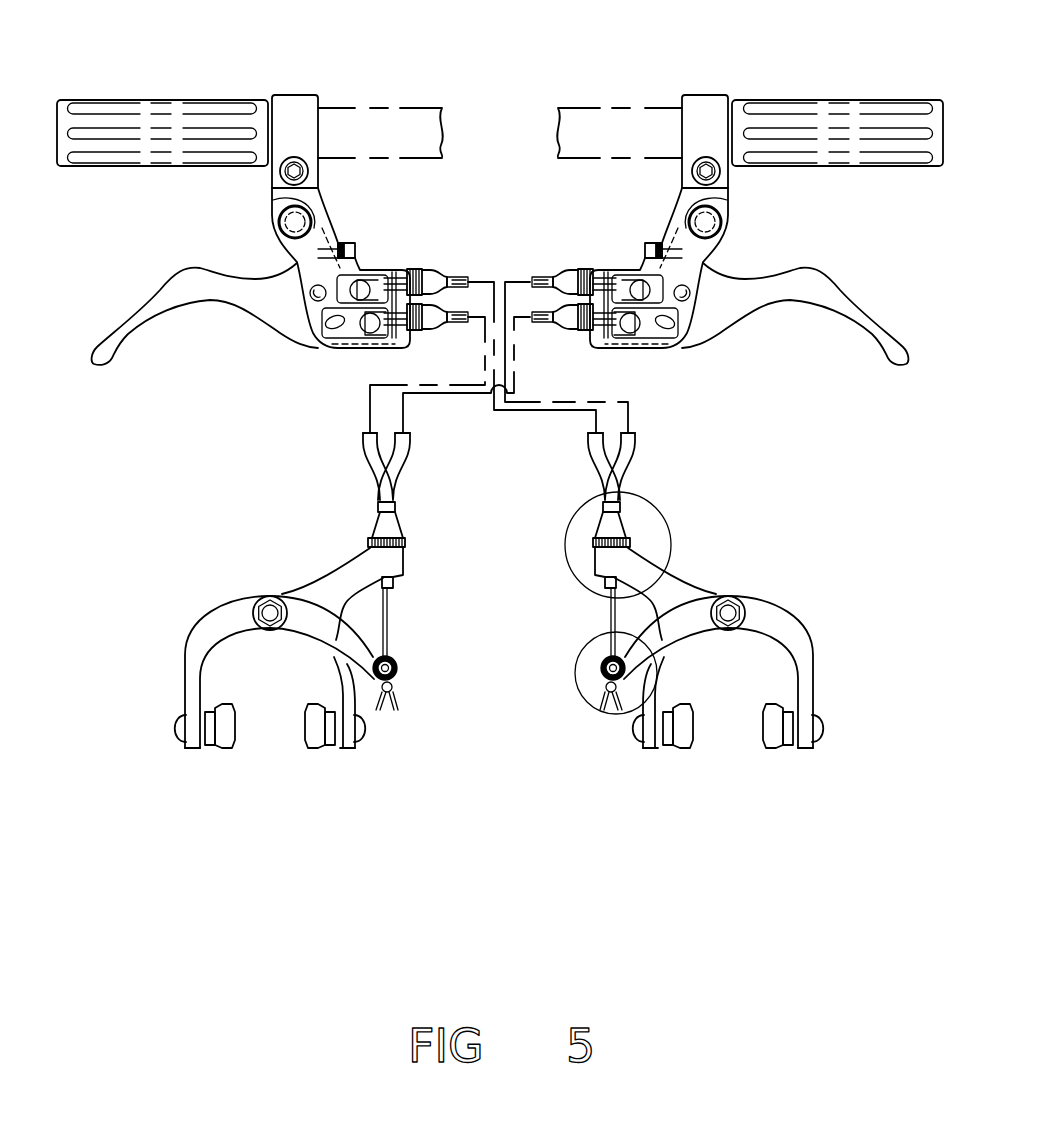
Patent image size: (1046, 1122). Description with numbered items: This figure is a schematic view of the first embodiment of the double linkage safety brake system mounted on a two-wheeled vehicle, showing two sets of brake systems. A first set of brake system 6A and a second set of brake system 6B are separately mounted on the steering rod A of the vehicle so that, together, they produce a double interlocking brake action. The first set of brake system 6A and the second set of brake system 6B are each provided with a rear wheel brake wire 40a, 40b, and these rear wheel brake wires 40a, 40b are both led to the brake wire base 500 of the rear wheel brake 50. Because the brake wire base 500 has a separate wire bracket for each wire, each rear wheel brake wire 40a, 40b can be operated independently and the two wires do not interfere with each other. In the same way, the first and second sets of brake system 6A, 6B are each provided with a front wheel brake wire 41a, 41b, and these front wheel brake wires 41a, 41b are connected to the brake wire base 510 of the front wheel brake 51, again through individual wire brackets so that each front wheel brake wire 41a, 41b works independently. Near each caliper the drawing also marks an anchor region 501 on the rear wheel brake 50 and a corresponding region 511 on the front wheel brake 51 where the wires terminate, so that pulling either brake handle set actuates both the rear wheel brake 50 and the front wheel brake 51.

The steering rod A is at (381, 122).
The first set of brake system 6A is at (388, 220).
The second set of brake system 6B is at (634, 220).
The rear wheel brake wire 40a is at (520, 281).
The rear wheel brake wire 40b is at (480, 281).
The front wheel brake wire 41a is at (519, 318).
The front wheel brake wire 41b is at (477, 318).
The rear wheel brake 50 is at (742, 692).
The brake wire base 500 is at (605, 562).
The cable anchor of first brake caliper 501 is at (606, 665).
The front wheel brake 51 is at (282, 692).
The brake wire base 510 is at (397, 561).
The cable anchor of second brake caliper 511 is at (397, 667).